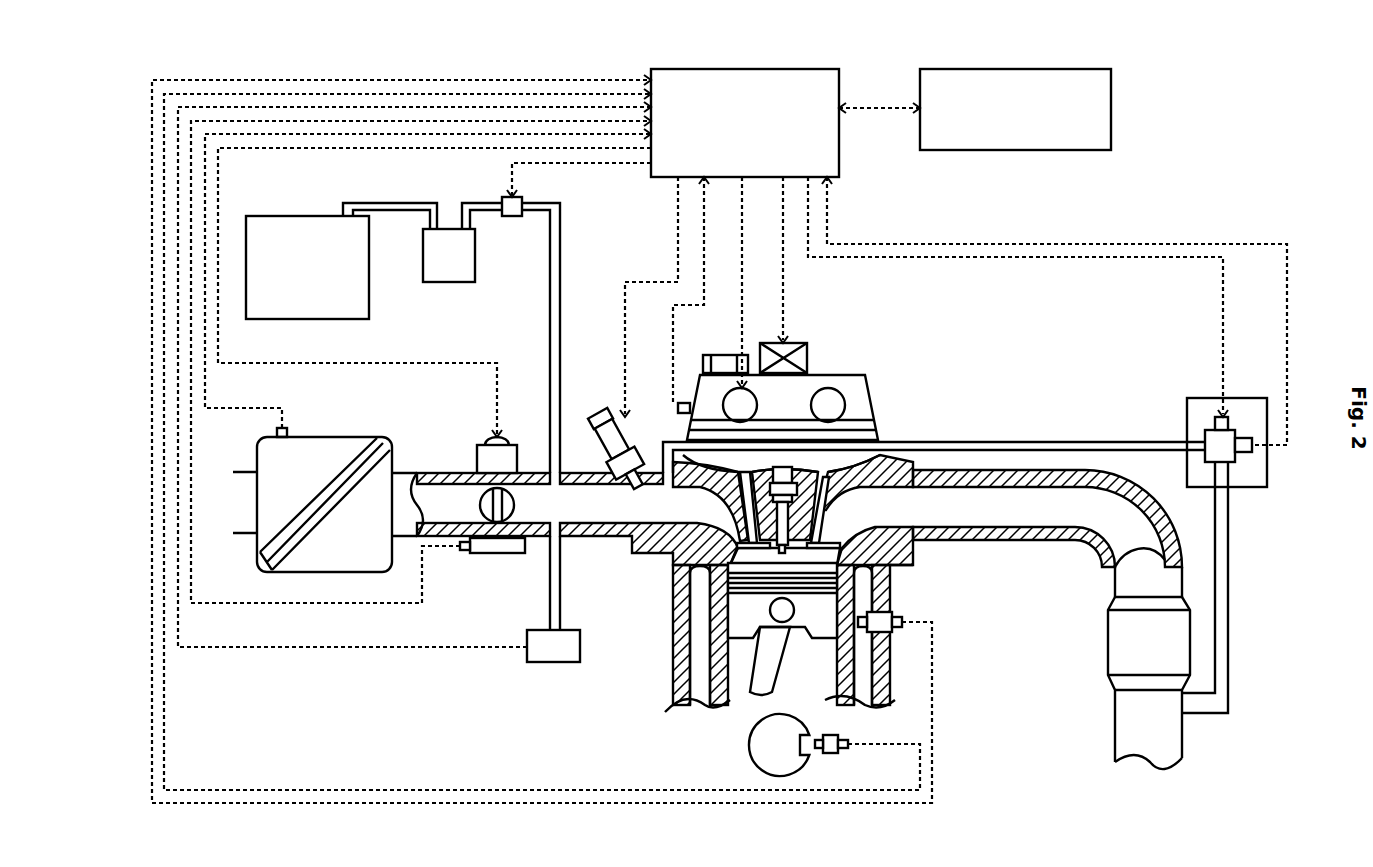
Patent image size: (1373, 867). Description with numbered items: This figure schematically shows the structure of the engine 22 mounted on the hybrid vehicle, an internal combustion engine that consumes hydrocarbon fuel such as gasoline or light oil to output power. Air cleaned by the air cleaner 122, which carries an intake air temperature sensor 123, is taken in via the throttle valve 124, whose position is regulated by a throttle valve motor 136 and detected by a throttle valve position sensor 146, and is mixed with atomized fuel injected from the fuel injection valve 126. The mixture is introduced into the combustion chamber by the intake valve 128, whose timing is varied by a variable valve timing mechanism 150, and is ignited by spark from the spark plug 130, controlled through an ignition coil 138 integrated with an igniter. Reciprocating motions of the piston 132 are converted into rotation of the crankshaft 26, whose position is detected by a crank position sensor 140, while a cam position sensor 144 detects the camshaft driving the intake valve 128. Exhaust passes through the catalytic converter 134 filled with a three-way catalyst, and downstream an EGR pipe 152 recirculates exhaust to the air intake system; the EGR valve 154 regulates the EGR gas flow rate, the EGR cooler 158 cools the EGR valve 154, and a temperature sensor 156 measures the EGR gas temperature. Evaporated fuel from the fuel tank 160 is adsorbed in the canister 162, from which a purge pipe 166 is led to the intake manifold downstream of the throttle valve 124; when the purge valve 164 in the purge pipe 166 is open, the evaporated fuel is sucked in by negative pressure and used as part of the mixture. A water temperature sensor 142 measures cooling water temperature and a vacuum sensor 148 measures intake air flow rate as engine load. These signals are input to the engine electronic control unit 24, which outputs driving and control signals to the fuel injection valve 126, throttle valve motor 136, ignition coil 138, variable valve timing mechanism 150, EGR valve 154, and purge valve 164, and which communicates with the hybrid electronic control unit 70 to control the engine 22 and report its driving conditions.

The engine 22 is at (926, 374).
The engine electronic control unit 24 is at (839, 170).
The crankshaft 26 is at (747, 744).
The hybrid electronic control unit 70 is at (1111, 108).
The air cleaner 122 is at (350, 437).
The intake air temperature sensor 123 is at (288, 432).
The throttle valve 124 is at (487, 512).
The fuel injection valve 126 is at (607, 460).
The intake valve 128 is at (750, 533).
The spark plug 130 is at (785, 535).
The piston 132 is at (745, 610).
The catalytic converter 134 is at (1120, 632).
The throttle valve motor 136 is at (478, 450).
The ignition coil 138 is at (807, 360).
The crank position sensor 140 is at (836, 753).
The water temperature sensor 142 is at (897, 612).
The cam position sensor 144 is at (683, 403).
The throttle valve position sensor 146 is at (497, 555).
The vacuum sensor 148 is at (553, 665).
The variable valve timing mechanism 150 is at (878, 415).
The EGR pipe 152 is at (1228, 615).
The EGR valve 154 is at (1202, 430).
The temperature sensor 156 is at (1247, 457).
The EGR cooler 158 is at (1018, 297).
The fuel tank 160 is at (370, 308).
The canister 162 is at (465, 282).
The purge valve 164 is at (523, 199).
The purge pipe 166 is at (561, 262).